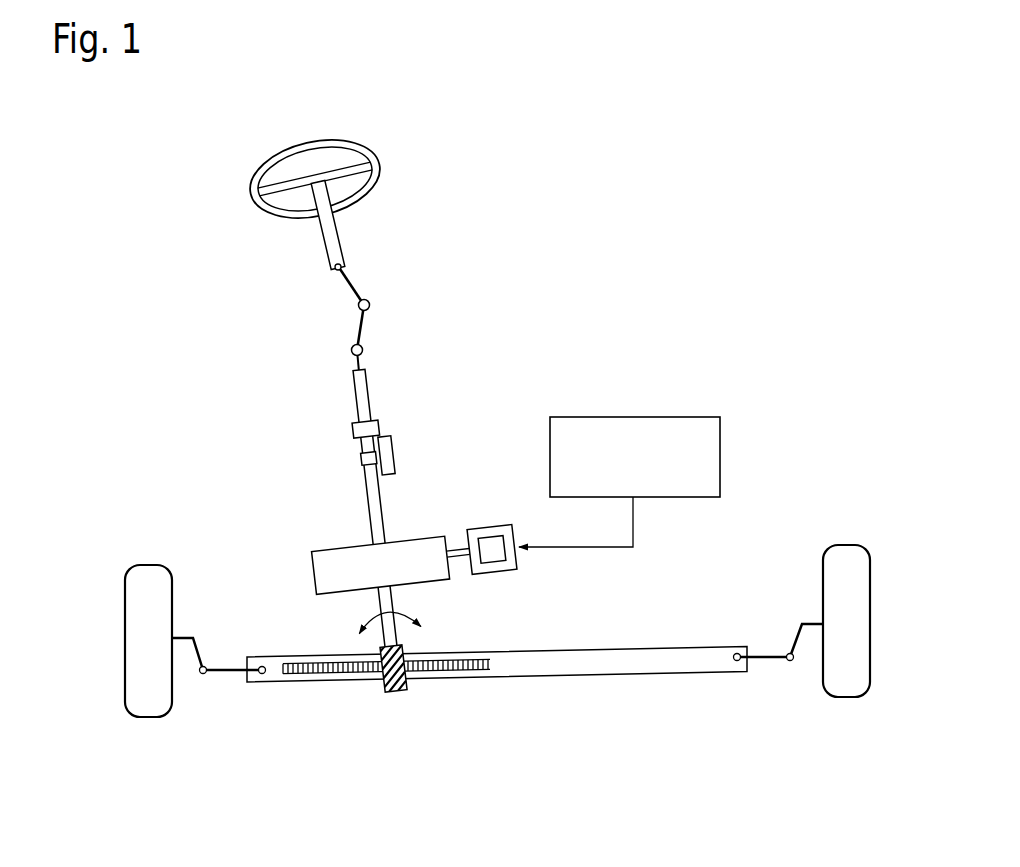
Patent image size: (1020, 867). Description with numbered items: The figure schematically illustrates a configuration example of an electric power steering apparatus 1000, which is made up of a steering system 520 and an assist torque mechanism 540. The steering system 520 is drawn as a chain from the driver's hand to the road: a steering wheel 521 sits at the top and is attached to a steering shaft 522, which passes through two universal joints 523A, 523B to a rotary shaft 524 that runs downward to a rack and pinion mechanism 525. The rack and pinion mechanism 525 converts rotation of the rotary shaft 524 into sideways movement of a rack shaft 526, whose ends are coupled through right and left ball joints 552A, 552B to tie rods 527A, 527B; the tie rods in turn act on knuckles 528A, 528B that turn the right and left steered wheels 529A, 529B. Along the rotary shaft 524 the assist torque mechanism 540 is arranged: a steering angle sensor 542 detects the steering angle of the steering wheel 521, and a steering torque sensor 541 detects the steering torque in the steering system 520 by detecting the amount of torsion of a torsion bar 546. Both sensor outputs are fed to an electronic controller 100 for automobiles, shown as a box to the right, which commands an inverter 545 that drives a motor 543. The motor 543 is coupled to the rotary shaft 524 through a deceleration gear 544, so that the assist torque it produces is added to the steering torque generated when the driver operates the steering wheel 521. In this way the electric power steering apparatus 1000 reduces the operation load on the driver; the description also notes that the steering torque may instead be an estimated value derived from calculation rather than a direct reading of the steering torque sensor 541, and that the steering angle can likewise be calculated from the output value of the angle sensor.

The electric power steering apparatus 1000 is at (541, 147).
The steering system 520 is at (324, 371).
The steering wheel 521 is at (268, 158).
The steering shaft 522 is at (339, 233).
The universal joint 523A is at (371, 303).
The universal joint 523B is at (363, 348).
The rotary shaft 524 is at (369, 398).
The rack and pinion mechanism 525 is at (403, 699).
The rack shaft 526 is at (540, 676).
The tie rod 527A is at (223, 663).
The tie rod 527B is at (782, 655).
The knuckle 528A is at (184, 637).
The knuckle 528B is at (805, 622).
The steered wheel 529A is at (155, 700).
The steered wheel 529B is at (840, 687).
The assist torque mechanism 540 is at (574, 386).
The steering torque sensor 541 is at (548, 457).
The steering angle sensor 542 is at (548, 427).
The motor 543 is at (509, 545).
The deceleration gear 544 is at (318, 548).
The inverter 545 is at (501, 557).
The torsion bar 546 is at (358, 458).
The ball joint 552A is at (260, 683).
The ball joint 552B is at (733, 663).
The electronic controller 100 is at (680, 418).